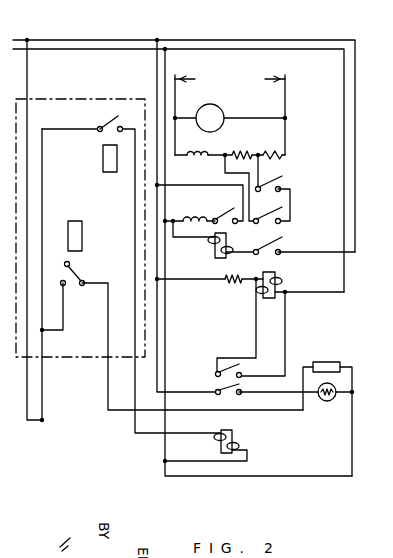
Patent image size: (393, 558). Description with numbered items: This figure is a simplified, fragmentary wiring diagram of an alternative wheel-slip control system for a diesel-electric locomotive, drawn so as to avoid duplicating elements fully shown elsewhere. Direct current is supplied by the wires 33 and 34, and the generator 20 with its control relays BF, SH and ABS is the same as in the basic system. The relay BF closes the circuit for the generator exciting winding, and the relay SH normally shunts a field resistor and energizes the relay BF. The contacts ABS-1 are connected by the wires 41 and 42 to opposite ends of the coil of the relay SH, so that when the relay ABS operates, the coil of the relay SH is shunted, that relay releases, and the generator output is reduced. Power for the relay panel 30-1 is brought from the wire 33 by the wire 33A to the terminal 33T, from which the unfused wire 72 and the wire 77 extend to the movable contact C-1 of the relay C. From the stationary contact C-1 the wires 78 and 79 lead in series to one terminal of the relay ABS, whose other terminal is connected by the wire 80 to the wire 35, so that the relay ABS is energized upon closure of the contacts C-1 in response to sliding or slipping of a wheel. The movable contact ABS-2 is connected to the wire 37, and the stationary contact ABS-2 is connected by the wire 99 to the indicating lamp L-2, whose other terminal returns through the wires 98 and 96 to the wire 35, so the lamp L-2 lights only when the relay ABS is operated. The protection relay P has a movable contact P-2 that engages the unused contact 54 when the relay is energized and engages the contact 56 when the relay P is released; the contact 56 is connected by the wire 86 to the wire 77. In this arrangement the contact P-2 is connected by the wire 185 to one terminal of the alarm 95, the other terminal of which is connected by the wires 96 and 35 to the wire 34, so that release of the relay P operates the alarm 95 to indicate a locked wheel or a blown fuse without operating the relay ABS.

The generator 20 is at (229, 111).
The wire 33 is at (28, 39).
The wire 34 is at (27, 50).
The relay panel 30-1 is at (78, 100).
The relay contact C-1 is at (108, 122).
The relay C is at (103, 163).
The wire 77 is at (42, 200).
The relay P is at (83, 228).
The contact 54 is at (67, 262).
The wire 78 is at (135, 252).
The movable contact P-2 is at (78, 272).
The contact 56 is at (63, 286).
The wire 86 is at (63, 318).
The wire 72 is at (42, 375).
The wire 185 is at (108, 391).
The terminal 33T is at (43, 421).
The wire 33A is at (33, 424).
The wire 37 is at (160, 312).
The wire 41 is at (256, 312).
The wire 42 is at (285, 318).
The relay BF is at (213, 246).
The relay SH is at (276, 274).
The relay contact ABS-1 is at (229, 368).
The relay contact ABS-2 is at (217, 388).
The relay ABS is at (222, 433).
The wire 35 is at (166, 423).
The wire 79 is at (152, 434).
The wire 80 is at (247, 459).
The alarm 95 is at (333, 362).
The wire 98 is at (352, 394).
The indicating lamp L-2 is at (327, 401).
The wire 96 is at (287, 477).
The wire 99 is at (258, 393).